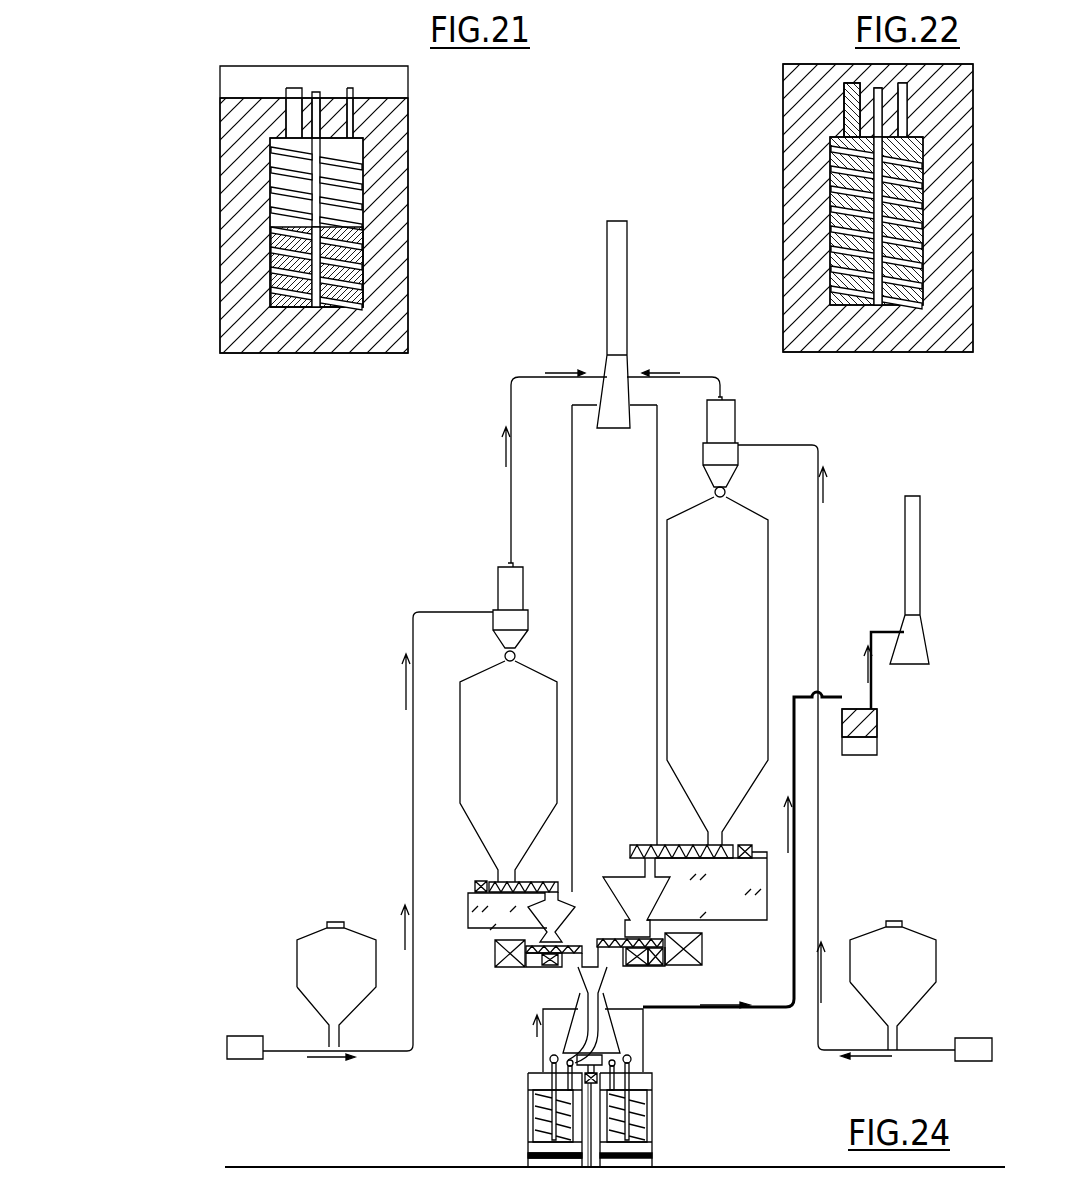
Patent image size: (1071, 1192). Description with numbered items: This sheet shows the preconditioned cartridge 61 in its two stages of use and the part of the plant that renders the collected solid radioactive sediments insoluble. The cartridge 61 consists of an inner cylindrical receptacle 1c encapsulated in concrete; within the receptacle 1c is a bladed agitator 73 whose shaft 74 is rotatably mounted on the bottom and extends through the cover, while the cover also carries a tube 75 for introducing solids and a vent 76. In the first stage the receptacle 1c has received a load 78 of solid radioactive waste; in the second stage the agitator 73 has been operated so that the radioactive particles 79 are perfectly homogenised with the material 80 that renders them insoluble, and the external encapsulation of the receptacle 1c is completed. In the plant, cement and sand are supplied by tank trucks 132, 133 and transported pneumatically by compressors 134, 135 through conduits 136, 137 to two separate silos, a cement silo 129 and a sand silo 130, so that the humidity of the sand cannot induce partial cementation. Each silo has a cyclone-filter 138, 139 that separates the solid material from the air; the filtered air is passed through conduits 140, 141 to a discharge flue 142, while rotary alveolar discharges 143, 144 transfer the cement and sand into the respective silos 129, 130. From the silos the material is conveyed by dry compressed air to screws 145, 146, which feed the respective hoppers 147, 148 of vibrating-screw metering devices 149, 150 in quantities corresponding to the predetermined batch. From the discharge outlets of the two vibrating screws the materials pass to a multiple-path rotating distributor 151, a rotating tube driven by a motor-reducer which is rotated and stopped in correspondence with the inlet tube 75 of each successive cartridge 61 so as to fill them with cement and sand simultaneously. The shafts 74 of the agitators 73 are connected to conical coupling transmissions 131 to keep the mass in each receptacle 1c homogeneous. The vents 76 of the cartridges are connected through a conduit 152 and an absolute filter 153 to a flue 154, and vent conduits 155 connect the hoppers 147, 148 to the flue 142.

In FIG. 21, the inner cylindrical receptacle 1c is at (363, 153).
In FIG. 24, the inner cylindrical receptacle 1c is at (540, 1107).
In FIG. 21, the preconditioned cartridge 61 is at (415, 217).
In FIG. 24, the preconditioned cartridge 61 is at (512, 1119).
In FIG. 21, the bladed agitator 73 is at (353, 202).
In FIG. 24, the bladed agitator 73 is at (537, 1137).
In FIG. 21, the shaft 74 is at (316, 92).
In FIG. 24, the shaft 74 is at (552, 1087).
In FIG. 21, the tube 75 is at (285, 93).
In FIG. 24, the tube 75 is at (590, 1088).
In FIG. 21, the vent 76 is at (350, 92).
In FIG. 24, the vent 76 is at (542, 1075).
In FIG. 21, the load of solid radioactive waste 78 is at (353, 237).
In FIG. 22, the radioactive particles 79 is at (833, 220).
In FIG. 22, the material for rendering insoluble 80 is at (833, 267).
In FIG. 24, the cement silo 129 is at (524, 766).
In FIG. 24, the sand silo 130 is at (731, 638).
In FIG. 24, the conical coupling transmission 131 is at (550, 1056).
In FIG. 24, the cement tank truck 132 is at (355, 975).
In FIG. 24, the sand tank truck 133 is at (912, 971).
In FIG. 24, the compressor 134 is at (249, 1040).
In FIG. 24, the compressor 135 is at (974, 1038).
In FIG. 24, the conduit 136 is at (410, 770).
In FIG. 24, the conduit 137 is at (818, 851).
In FIG. 24, the cyclone-filter 138 is at (497, 588).
In FIG. 24, the cyclone-filter 139 is at (738, 428).
In FIG. 24, the conduit 140 is at (510, 517).
In FIG. 24, the conduit 141 is at (697, 374).
In FIG. 24, the discharge flue 142 is at (627, 342).
In FIG. 24, the rotary alveolar discharge 143 is at (505, 658).
In FIG. 24, the rotary alveolar discharge 144 is at (726, 492).
In FIG. 24, the screw 145 is at (507, 892).
In FIG. 24, the screw 146 is at (713, 862).
In FIG. 24, the hopper 147 is at (553, 917).
In FIG. 24, the hopper 148 is at (615, 862).
In FIG. 24, the vibrating-screw metering device 149 is at (537, 957).
In FIG. 24, the vibrating-screw metering device 150 is at (667, 970).
In FIG. 24, the multiple-path rotating distributor 151 is at (613, 1020).
In FIG. 24, the conduit 152 is at (790, 1015).
In FIG. 24, the absolute filter 153 is at (878, 751).
In FIG. 24, the flue 154 is at (922, 641).
In FIG. 24, the vent conduits 155 is at (655, 652).